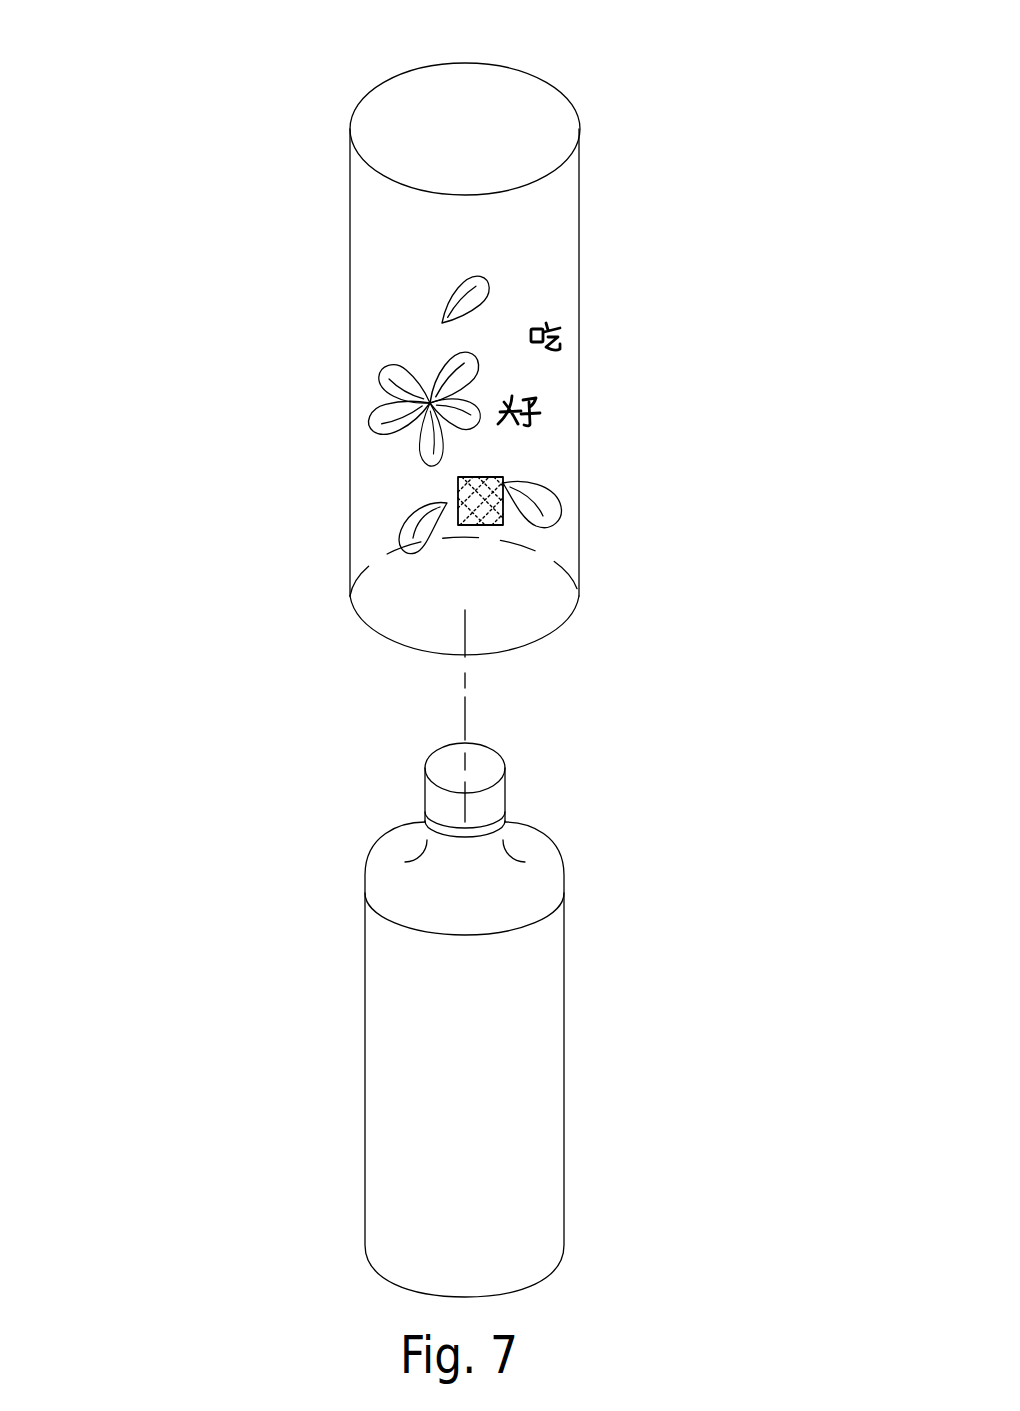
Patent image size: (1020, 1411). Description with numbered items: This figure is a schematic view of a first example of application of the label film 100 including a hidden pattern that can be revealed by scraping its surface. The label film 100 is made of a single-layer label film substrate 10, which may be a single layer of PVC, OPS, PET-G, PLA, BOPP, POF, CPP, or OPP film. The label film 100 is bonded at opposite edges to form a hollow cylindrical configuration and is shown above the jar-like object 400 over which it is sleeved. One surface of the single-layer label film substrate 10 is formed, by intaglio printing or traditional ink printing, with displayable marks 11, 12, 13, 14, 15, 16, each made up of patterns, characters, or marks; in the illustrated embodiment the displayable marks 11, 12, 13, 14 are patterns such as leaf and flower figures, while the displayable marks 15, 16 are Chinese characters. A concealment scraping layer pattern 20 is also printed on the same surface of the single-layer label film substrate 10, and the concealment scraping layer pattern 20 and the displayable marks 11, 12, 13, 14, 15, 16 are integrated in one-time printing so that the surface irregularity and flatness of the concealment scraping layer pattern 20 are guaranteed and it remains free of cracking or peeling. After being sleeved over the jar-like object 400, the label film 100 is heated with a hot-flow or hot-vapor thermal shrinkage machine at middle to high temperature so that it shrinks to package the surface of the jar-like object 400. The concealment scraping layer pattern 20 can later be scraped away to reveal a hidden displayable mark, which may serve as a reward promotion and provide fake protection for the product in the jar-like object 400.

The label film 100 is at (258, 198).
The single-layer label film substrate 10 is at (545, 118).
The displayable mark 11 is at (465, 283).
The displayable mark 12 is at (385, 403).
The displayable mark 13 is at (447, 503).
The displayable mark 14 is at (538, 505).
The displayable mark 15 is at (548, 320).
The displayable mark 16 is at (533, 405).
The concealment scraping layer pattern 20 is at (460, 524).
The jar-like object 400 is at (567, 1057).